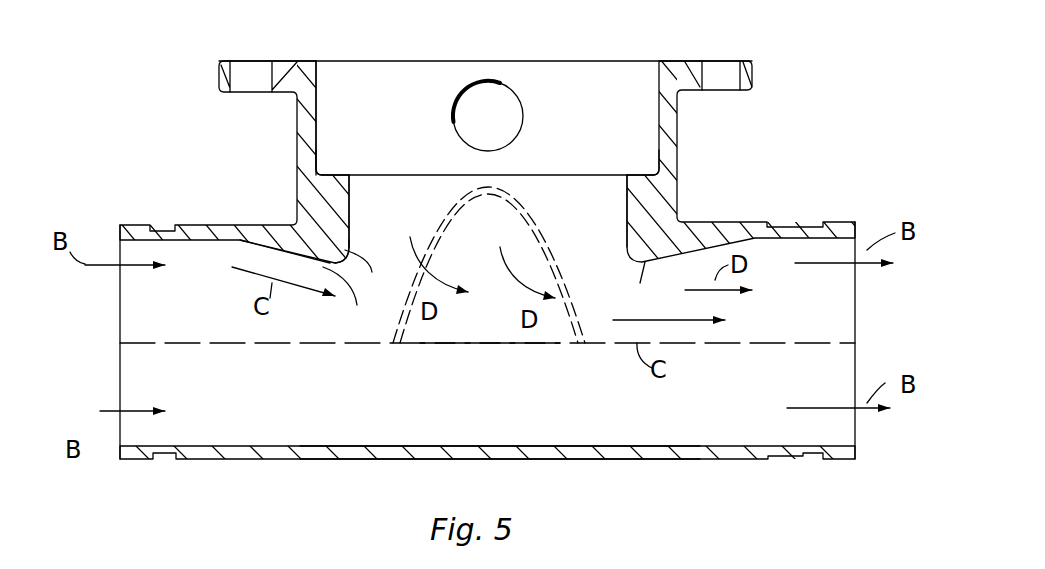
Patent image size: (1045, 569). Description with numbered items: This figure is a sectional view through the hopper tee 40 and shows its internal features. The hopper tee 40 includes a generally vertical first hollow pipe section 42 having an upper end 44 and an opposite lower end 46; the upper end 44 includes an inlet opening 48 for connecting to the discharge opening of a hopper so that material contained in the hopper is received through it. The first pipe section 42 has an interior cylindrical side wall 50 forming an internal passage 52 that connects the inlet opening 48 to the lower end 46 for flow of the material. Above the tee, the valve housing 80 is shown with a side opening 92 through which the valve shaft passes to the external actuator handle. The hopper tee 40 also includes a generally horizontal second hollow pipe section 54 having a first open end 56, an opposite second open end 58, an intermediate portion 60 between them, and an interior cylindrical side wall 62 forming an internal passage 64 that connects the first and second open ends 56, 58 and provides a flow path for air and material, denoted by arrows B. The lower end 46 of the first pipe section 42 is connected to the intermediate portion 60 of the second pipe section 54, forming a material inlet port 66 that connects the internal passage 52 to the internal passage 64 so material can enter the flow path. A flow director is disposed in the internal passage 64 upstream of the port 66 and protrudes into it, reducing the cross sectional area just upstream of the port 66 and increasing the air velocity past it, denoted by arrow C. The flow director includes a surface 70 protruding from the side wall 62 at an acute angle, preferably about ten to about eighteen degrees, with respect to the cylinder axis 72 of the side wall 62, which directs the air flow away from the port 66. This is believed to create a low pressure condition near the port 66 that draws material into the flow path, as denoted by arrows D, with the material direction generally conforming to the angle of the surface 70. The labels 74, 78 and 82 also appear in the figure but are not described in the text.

The hopper tee 40 is at (862, 469).
The first hollow pipe section 42 is at (680, 203).
The upper end 44 is at (678, 137).
The lower end 46 is at (297, 205).
The inlet opening 48 is at (349, 182).
The interior cylindrical side wall 50 is at (350, 200).
The internal passage 52 is at (612, 194).
The second hollow pipe section 54 is at (571, 461).
The first open end 56 is at (848, 430).
The second open end 58 is at (130, 387).
The intermediate portion 60 is at (405, 461).
The interior cylindrical side wall 62 is at (480, 444).
The internal passage 64 is at (506, 338).
The material inlet port 66 is at (508, 230).
The surface 70 is at (268, 250).
The cylinder axis 72 is at (857, 343).
The lower edge of left wall 74 is at (365, 270).
The flow boundary 78 is at (545, 213).
The housing 80 is at (297, 113).
The top of cup wall 82 is at (317, 82).
The side opening 92 is at (520, 113).